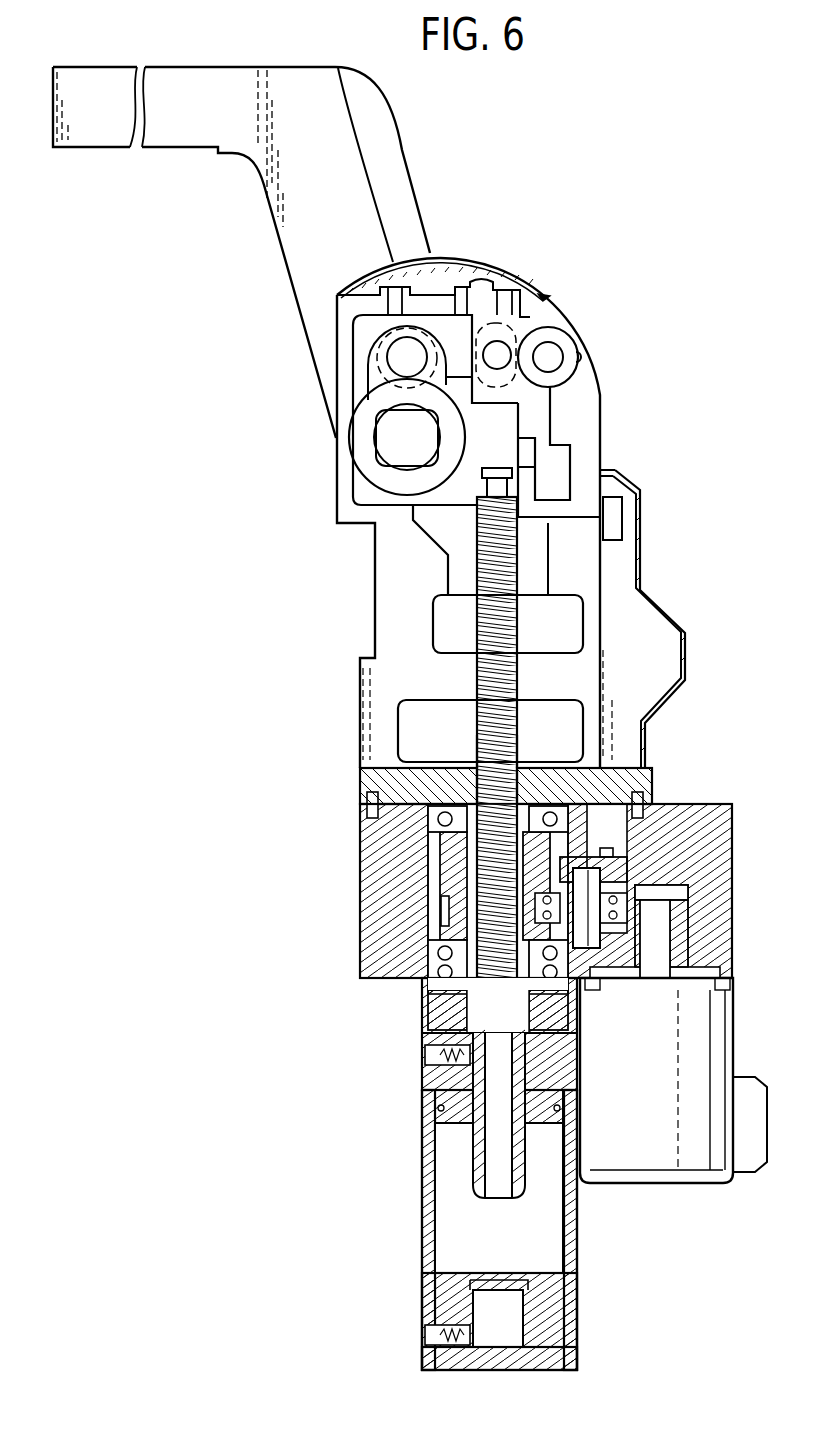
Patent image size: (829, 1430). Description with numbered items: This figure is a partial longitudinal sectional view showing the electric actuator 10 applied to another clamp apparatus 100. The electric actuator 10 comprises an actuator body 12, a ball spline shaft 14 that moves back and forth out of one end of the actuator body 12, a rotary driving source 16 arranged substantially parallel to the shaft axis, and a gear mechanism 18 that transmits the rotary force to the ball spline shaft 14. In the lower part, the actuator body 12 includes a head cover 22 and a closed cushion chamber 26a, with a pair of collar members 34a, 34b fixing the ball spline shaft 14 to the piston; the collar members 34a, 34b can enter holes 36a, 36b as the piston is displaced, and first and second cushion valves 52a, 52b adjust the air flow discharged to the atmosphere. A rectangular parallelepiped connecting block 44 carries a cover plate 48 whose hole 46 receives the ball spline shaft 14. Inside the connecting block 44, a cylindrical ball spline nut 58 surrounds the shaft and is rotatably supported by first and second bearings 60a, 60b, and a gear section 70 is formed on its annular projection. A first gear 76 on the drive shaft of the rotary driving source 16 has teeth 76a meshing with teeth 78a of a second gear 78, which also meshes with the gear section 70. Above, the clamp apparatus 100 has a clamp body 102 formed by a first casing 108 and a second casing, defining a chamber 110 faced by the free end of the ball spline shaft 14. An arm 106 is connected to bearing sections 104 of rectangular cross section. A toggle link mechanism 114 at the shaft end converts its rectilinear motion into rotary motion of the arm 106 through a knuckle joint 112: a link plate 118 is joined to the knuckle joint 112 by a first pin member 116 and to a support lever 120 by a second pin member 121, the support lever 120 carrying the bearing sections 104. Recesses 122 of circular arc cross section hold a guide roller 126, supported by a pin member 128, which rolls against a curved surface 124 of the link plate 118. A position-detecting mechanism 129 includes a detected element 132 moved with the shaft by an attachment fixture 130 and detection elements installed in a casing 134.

The electric actuator 10 is at (352, 1240).
The actuator body 12 is at (420, 1135).
The ball spline shaft 14 is at (497, 622).
The rotary driving source 16 is at (700, 1035).
The gear mechanism 18 is at (593, 862).
The head cover 22 is at (552, 1350).
The cushion chamber 26a is at (476, 1248).
The collar member 34a is at (478, 1165).
The collar member 34b is at (433, 1108).
The hole 36a is at (512, 1312).
The hole 36b is at (540, 1060).
The connecting block 44 is at (712, 857).
The hole 46 is at (483, 748).
The cover plate 48 is at (370, 800).
The first cushion valve 52a is at (428, 1335).
The second cushion valve 52b is at (428, 1052).
The ball spline nut 58 is at (450, 880).
The first bearing 60a is at (440, 960).
The second bearing 60b is at (440, 825).
The gear section 70 is at (441, 925).
The first gear 76 is at (672, 940).
The teeth 76a is at (688, 908).
The second gear 78 is at (640, 875).
The teeth 78a is at (640, 895).
The clamp apparatus 100 is at (707, 122).
The clamp body 102 is at (358, 685).
The bearing sections 104 is at (405, 438).
The arm 106 is at (352, 172).
The first casing 108 is at (405, 567).
The chamber 110 is at (533, 558).
The knuckle joint 112 is at (502, 423).
The toggle link mechanism 114 is at (440, 323).
The first pin member 116 is at (500, 352).
The link plate 118 is at (458, 340).
The support lever 120 is at (376, 360).
The second pin member 121 is at (405, 357).
The recesses 122 is at (579, 357).
The curved surface 124 is at (520, 335).
The guide roller 126 is at (562, 338).
The pin member 128 is at (550, 360).
The position-detecting mechanism 129 is at (670, 605).
The attachment fixture 130 is at (606, 472).
The detected element 132 is at (621, 512).
The casing 134 is at (684, 645).